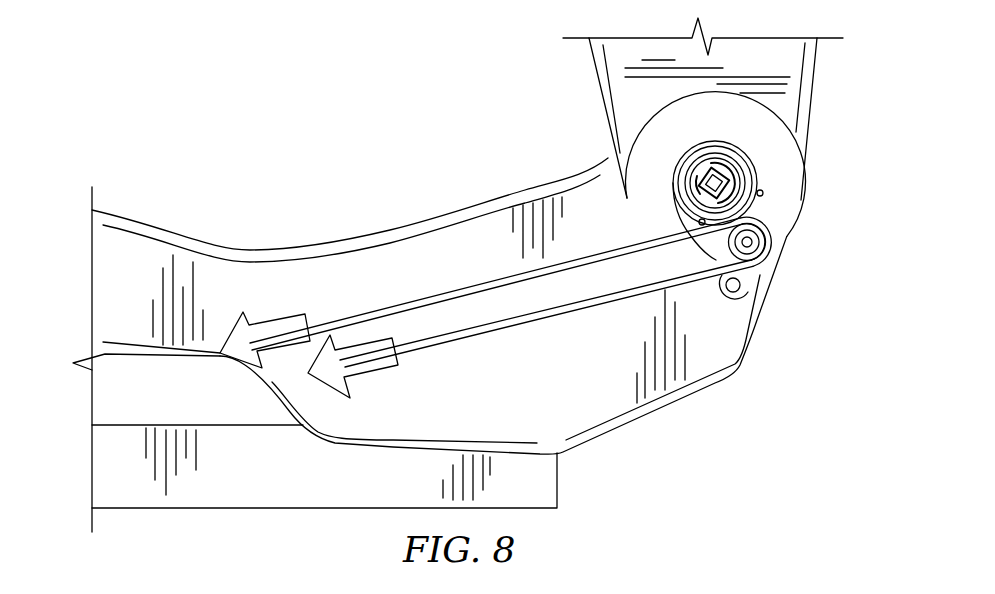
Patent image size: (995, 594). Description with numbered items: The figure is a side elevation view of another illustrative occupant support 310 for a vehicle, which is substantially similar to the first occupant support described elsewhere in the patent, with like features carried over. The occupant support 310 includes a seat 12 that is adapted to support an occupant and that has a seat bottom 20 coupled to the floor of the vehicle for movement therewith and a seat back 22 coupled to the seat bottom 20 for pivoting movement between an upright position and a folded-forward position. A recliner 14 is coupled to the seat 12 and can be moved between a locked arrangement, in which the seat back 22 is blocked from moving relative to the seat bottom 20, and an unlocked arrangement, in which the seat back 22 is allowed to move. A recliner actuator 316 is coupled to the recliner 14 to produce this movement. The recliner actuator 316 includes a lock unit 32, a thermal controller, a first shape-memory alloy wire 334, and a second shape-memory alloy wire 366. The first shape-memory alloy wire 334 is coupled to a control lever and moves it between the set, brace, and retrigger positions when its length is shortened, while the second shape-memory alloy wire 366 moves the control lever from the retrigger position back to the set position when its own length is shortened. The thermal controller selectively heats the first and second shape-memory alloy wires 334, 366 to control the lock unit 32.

The occupant support 310 is at (143, 110).
The seat 12 is at (318, 202).
The seat bottom 20 is at (150, 222).
The seat back 22 is at (592, 59).
The recliner 14 is at (727, 168).
The lock unit 32 is at (777, 200).
The first shape-memory alloy wire 334 is at (474, 287).
The second shape-memory alloy wire 366 is at (540, 320).
The recliner actuator 316 is at (717, 323).